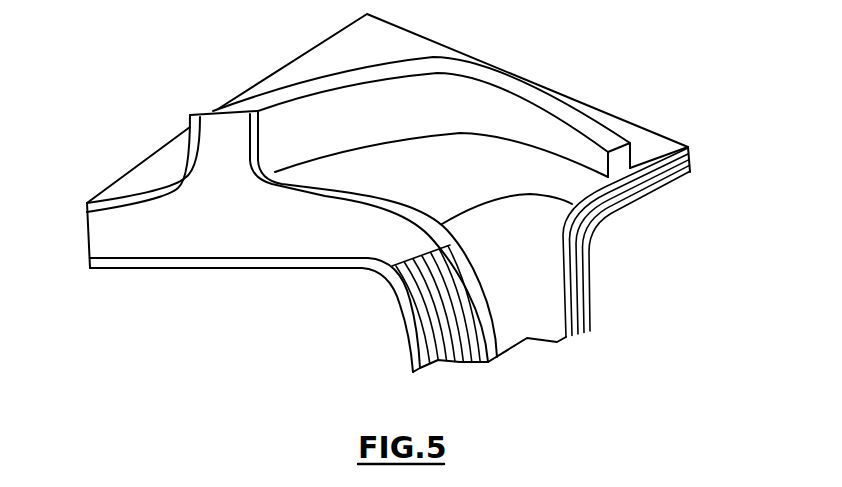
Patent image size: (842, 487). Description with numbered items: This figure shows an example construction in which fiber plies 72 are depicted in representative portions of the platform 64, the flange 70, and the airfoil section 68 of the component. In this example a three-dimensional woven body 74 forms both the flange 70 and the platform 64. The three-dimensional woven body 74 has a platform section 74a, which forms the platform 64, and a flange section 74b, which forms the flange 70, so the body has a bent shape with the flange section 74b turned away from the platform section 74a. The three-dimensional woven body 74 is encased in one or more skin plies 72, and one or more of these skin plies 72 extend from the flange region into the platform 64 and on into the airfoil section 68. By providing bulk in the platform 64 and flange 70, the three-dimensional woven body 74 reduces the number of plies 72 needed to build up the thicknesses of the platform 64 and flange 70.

The platform 64 is at (152, 182).
The airfoil section 68 is at (590, 284).
The flange 70 is at (254, 76).
The plies 72 is at (175, 195).
The three-dimensional woven body 74 is at (257, 225).
The platform section 74a is at (155, 243).
The flange section 74b is at (232, 132).